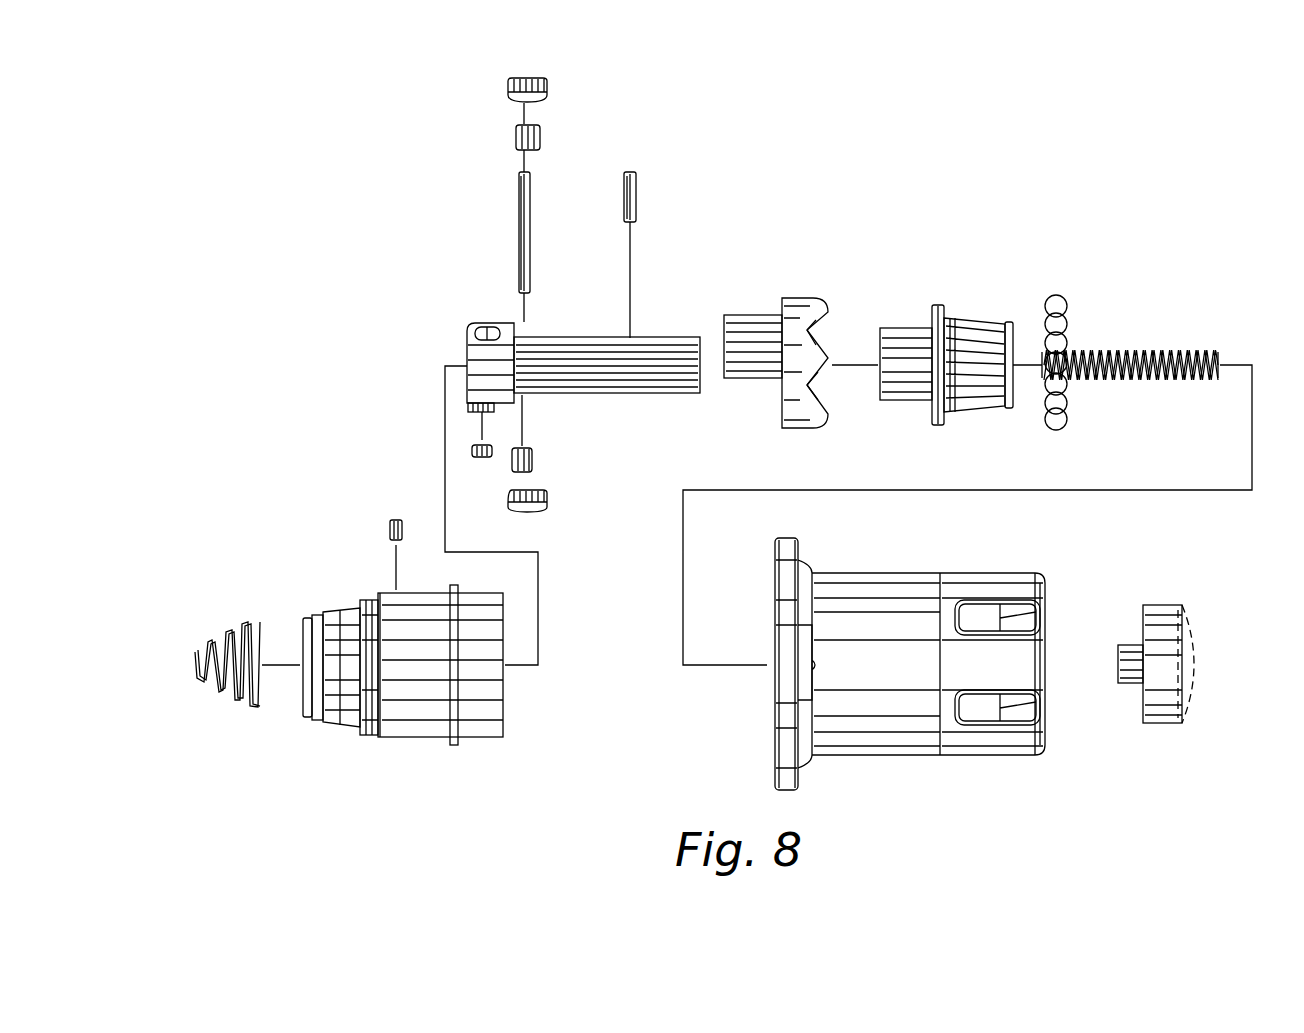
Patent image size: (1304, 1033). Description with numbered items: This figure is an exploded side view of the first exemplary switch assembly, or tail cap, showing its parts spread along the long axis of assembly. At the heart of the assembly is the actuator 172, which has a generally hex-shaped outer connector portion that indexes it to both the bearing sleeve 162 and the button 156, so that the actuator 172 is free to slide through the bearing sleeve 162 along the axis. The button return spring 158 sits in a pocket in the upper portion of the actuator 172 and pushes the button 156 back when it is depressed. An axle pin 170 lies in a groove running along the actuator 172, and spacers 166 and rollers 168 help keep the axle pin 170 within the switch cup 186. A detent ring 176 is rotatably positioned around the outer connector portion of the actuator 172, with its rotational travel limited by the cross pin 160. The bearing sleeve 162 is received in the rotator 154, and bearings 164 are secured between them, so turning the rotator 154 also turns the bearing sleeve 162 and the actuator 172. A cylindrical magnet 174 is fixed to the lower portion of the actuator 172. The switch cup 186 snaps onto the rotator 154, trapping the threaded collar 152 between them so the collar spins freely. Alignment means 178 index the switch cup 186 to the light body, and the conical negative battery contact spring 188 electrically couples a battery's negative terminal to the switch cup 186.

The threaded collar 152 is at (878, 573).
The rotator 154 is at (995, 573).
The button 156 is at (1183, 605).
The button return spring 158 is at (1183, 352).
The cross pin 160 is at (632, 172).
The bearing sleeve 162 is at (950, 318).
The bearings 164 is at (1062, 298).
The spacers 166 is at (540, 136).
The rollers 168 is at (535, 82).
The axle pin 170 is at (535, 222).
The actuator 172 is at (672, 332).
The magnet 174 is at (470, 452).
The detent ring 176 is at (806, 300).
The alignment means 178 is at (388, 530).
The switch cup 186 is at (422, 748).
The conical negative battery contact spring 188 is at (228, 630).